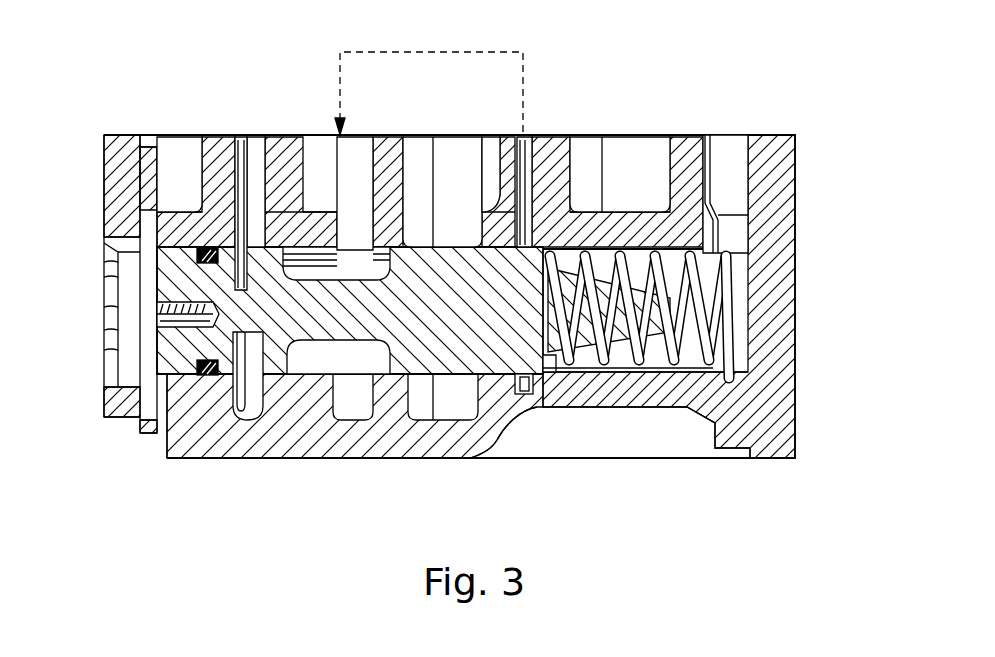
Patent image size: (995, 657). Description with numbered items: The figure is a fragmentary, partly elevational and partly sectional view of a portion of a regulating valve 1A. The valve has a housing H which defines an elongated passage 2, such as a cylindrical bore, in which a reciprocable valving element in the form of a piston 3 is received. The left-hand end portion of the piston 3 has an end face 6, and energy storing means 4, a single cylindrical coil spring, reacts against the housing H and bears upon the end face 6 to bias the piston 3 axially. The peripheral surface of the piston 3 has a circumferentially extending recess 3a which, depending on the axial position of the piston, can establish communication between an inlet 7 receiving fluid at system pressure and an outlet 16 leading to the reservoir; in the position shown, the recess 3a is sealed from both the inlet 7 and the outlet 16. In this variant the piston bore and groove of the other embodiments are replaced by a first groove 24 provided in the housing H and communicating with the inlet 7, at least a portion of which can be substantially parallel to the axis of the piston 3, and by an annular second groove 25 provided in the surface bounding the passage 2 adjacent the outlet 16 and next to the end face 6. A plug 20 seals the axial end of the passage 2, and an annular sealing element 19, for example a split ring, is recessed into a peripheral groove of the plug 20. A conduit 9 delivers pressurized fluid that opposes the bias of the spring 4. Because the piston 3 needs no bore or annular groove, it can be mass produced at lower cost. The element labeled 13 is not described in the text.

The valve 1A is at (238, 530).
The passage 2 is at (620, 365).
The piston 3 is at (280, 375).
The recess 3a is at (313, 370).
The energy storing means 4 is at (730, 305).
The end face 6 is at (550, 400).
The inlet 7 is at (316, 137).
The conduit 9 is at (253, 137).
The plate 13 is at (728, 145).
The outlet 16 is at (457, 137).
The annular sealing element 19 is at (208, 372).
The plug 20 is at (165, 355).
The first groove 24 is at (523, 52).
The second groove 25 is at (525, 395).
The housing H is at (160, 464).